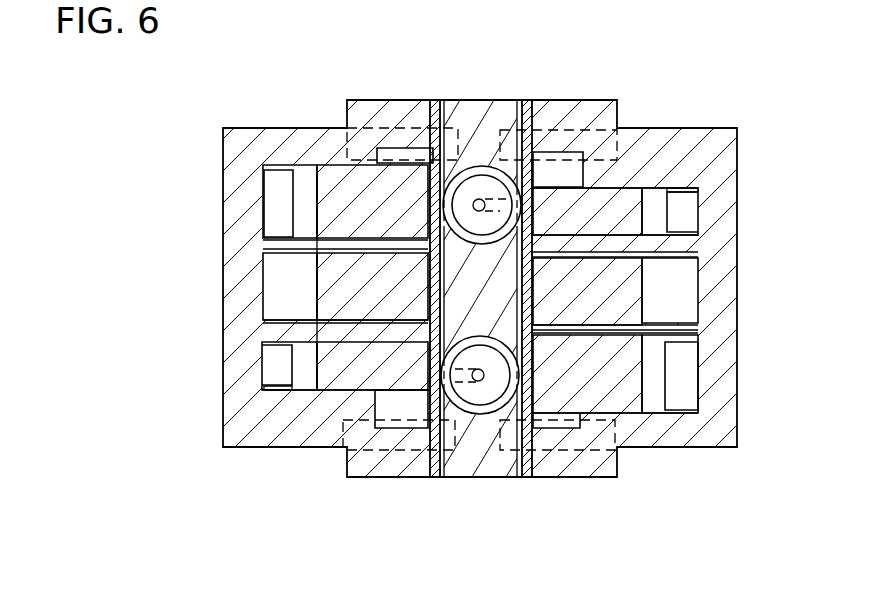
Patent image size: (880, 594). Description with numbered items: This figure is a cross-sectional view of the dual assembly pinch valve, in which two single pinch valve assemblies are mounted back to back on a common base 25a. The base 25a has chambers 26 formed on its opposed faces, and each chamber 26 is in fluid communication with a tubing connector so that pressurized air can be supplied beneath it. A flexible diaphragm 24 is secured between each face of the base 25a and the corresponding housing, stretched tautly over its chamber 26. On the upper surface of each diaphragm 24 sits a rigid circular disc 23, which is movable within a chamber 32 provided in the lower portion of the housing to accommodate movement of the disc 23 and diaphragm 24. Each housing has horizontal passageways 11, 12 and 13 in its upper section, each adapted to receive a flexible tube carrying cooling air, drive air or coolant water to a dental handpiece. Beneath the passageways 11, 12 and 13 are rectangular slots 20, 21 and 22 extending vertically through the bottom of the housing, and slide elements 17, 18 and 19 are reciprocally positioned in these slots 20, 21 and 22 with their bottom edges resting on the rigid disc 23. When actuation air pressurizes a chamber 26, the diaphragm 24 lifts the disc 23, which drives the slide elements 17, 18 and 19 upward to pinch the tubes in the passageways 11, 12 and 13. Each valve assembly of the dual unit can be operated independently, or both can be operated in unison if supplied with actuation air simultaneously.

The horizontal passageway 11 is at (277, 208).
The horizontal passageway 12 is at (300, 289).
The horizontal passageway 13 is at (277, 371).
The slide element 17 is at (332, 190).
The slide element 18 is at (360, 318).
The slide element 19 is at (603, 208).
The rectangular slot 20 is at (300, 193).
The rectangular slot 21 is at (330, 248).
The rectangular slot 22 is at (686, 190).
The rigid circular disc 23 is at (437, 160).
The flexible diaphragm 24 is at (523, 120).
The base 25a is at (478, 446).
The chamber 26 is at (452, 165).
The chamber 32 is at (395, 155).